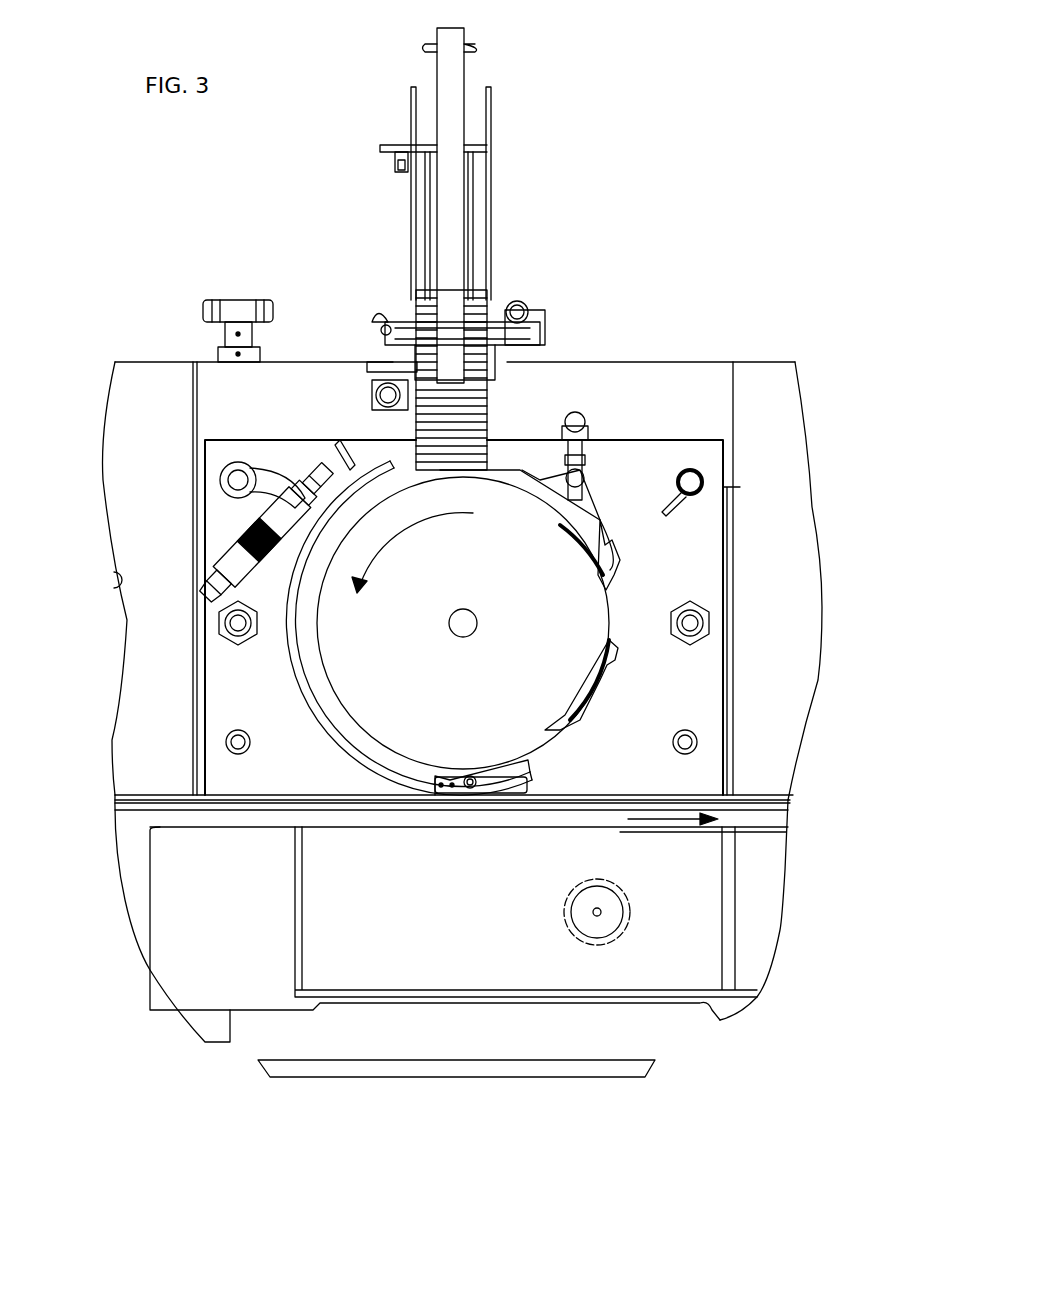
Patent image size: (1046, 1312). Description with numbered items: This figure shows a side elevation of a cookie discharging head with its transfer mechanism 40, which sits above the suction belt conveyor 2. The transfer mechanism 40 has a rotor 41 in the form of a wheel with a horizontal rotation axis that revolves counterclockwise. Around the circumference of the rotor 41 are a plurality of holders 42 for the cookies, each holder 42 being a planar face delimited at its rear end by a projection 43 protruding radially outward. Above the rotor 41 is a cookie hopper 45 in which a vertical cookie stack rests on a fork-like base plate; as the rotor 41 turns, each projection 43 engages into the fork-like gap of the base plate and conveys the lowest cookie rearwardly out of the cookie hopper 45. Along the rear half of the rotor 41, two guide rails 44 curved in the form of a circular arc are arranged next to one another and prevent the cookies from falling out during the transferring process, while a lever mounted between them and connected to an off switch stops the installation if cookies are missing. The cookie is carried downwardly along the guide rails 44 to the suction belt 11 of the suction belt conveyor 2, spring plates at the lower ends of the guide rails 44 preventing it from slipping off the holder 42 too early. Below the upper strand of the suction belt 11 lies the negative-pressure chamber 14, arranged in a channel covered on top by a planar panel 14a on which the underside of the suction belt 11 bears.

The suction belt conveyor 2 is at (770, 786).
The suction belt 11 is at (765, 806).
The negative-pressure chamber 14 is at (735, 932).
The planar panel 14a is at (163, 810).
The transfer mechanism 40 is at (632, 477).
The rotor 41 is at (370, 648).
The holder 42 is at (578, 521).
The projection 43 is at (602, 555).
The guide rail 44 is at (320, 572).
The cookie hopper 45 is at (505, 147).